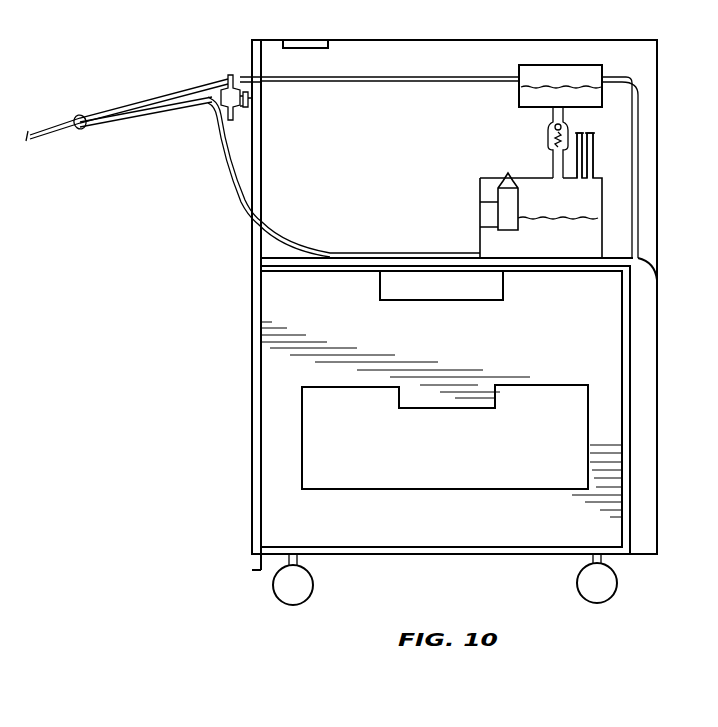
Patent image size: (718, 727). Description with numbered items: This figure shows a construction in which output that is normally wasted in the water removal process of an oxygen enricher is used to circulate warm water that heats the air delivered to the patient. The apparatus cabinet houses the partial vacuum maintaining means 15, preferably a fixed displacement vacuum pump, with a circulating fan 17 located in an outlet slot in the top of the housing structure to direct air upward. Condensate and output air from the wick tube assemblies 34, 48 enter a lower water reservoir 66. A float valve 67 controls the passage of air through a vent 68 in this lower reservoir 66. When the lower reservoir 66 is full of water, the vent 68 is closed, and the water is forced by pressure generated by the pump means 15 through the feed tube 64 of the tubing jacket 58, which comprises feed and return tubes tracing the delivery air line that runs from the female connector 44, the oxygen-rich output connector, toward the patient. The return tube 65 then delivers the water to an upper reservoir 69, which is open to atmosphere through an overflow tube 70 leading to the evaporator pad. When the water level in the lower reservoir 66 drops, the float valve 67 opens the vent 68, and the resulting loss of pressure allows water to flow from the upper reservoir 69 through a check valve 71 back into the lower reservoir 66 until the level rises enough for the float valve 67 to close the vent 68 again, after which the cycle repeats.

The partial vacuum maintaining means 15 is at (515, 382).
The circulating fan 17 is at (505, 298).
The wick tube assembly 34 is at (593, 168).
The female connector 44 is at (250, 100).
The wick tube assembly 48 is at (597, 143).
The tubing jacket 58 is at (53, 128).
The feed tube 64 is at (215, 147).
The return tube 65 is at (213, 88).
The lower water reservoir 66 is at (597, 250).
The float valve 67 is at (480, 200).
The vent 68 is at (503, 177).
The upper reservoir 69 is at (545, 65).
The overflow tube 70 is at (640, 120).
The check valve 71 is at (548, 132).